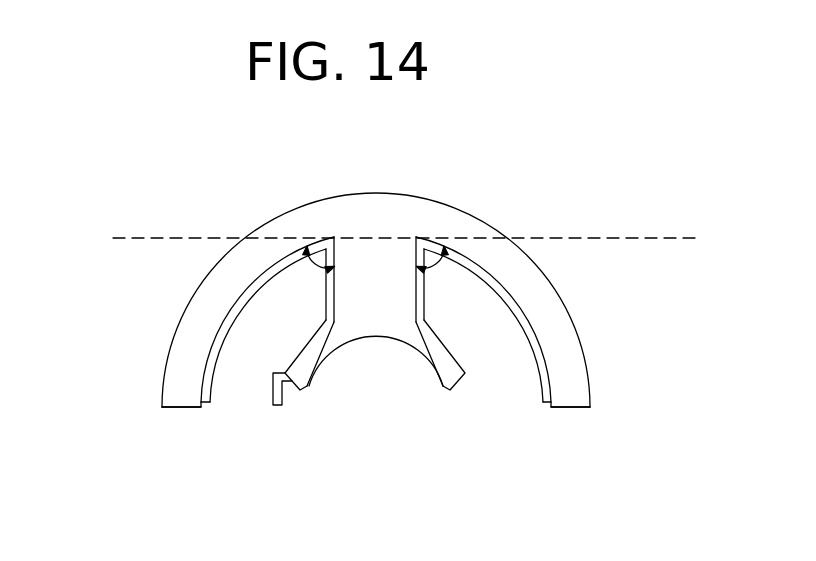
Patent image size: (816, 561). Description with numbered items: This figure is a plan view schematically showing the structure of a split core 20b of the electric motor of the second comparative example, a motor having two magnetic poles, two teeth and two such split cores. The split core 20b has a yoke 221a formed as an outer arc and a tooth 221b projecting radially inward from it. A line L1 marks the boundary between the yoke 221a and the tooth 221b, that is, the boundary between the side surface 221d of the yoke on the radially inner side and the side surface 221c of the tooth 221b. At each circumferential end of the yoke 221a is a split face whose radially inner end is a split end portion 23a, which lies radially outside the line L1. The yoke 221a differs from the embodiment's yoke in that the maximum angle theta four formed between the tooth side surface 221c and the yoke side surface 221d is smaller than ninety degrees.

The split core 20b is at (341, 303).
The yoke 221a is at (378, 217).
The tooth 221b is at (381, 305).
The side surface of the tooth 221c is at (334, 303).
The side surface of the yoke 221d is at (292, 251).
The split end portion 23a is at (203, 407).
The line L1 is at (658, 238).